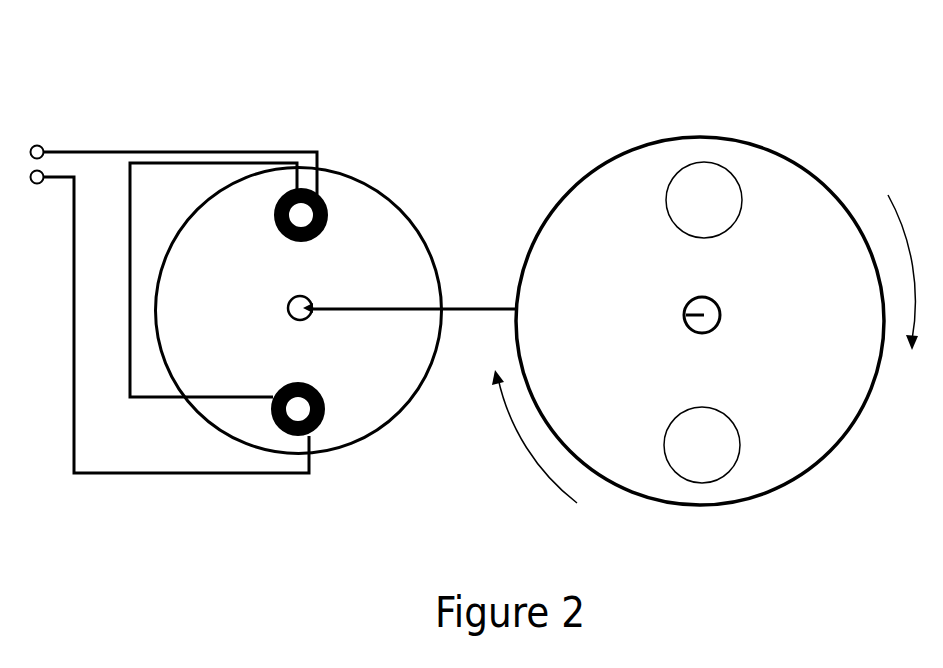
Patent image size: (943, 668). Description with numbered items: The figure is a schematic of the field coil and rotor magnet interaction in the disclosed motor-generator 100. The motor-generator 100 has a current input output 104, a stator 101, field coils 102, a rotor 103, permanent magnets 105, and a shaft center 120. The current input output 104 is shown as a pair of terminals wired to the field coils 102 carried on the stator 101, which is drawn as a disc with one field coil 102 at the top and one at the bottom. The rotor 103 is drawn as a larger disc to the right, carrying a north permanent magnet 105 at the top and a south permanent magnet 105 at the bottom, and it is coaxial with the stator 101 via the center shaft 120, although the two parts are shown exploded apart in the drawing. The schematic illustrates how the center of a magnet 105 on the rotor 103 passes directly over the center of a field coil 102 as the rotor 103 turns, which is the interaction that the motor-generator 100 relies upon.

The motor-generator 100 is at (437, 502).
The stator 101 is at (356, 405).
The field coils 102 is at (332, 210).
The rotors 103 is at (795, 402).
The current input output 104 is at (60, 158).
The permanent magnets 105 is at (740, 176).
The shaft center 120 is at (705, 312).